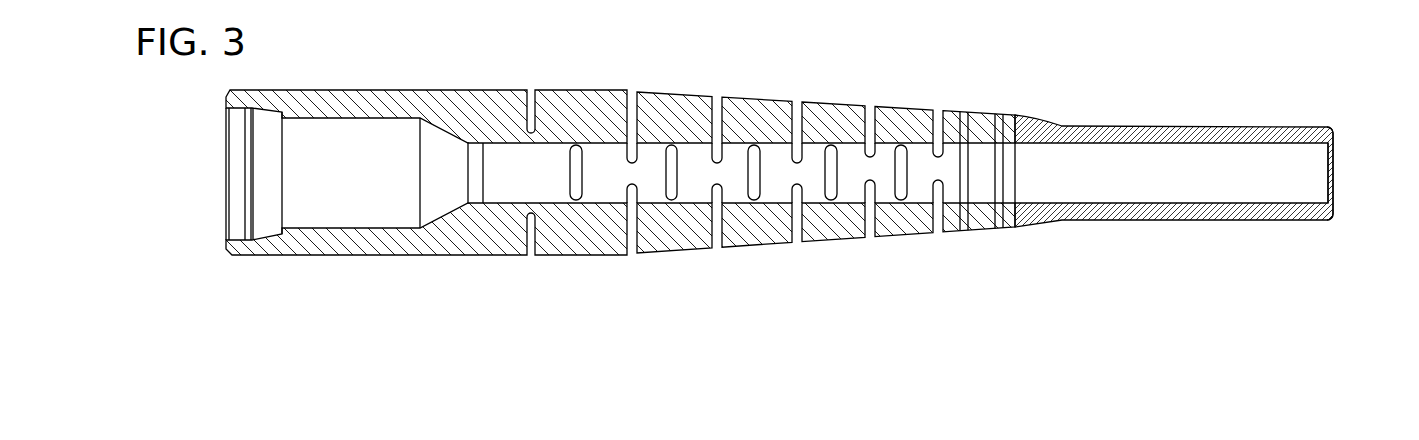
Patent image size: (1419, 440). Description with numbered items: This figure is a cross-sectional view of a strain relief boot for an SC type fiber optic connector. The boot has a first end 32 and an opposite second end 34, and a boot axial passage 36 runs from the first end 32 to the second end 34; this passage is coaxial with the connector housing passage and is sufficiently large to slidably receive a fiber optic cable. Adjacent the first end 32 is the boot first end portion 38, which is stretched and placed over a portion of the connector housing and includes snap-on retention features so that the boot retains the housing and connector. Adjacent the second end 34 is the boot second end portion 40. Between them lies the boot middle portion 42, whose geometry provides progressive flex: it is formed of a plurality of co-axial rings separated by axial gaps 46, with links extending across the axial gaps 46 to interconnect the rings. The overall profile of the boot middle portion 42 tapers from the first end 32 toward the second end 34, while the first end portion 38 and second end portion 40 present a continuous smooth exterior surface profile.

The first end 32 is at (226, 242).
The second end 34 is at (1334, 133).
The boot axial passage 36 is at (370, 190).
The boot first end portion 38 is at (365, 85).
The boot second end portion 40 is at (1157, 222).
The boot middle portion 42 is at (687, 261).
The axial gaps 46 is at (996, 224).